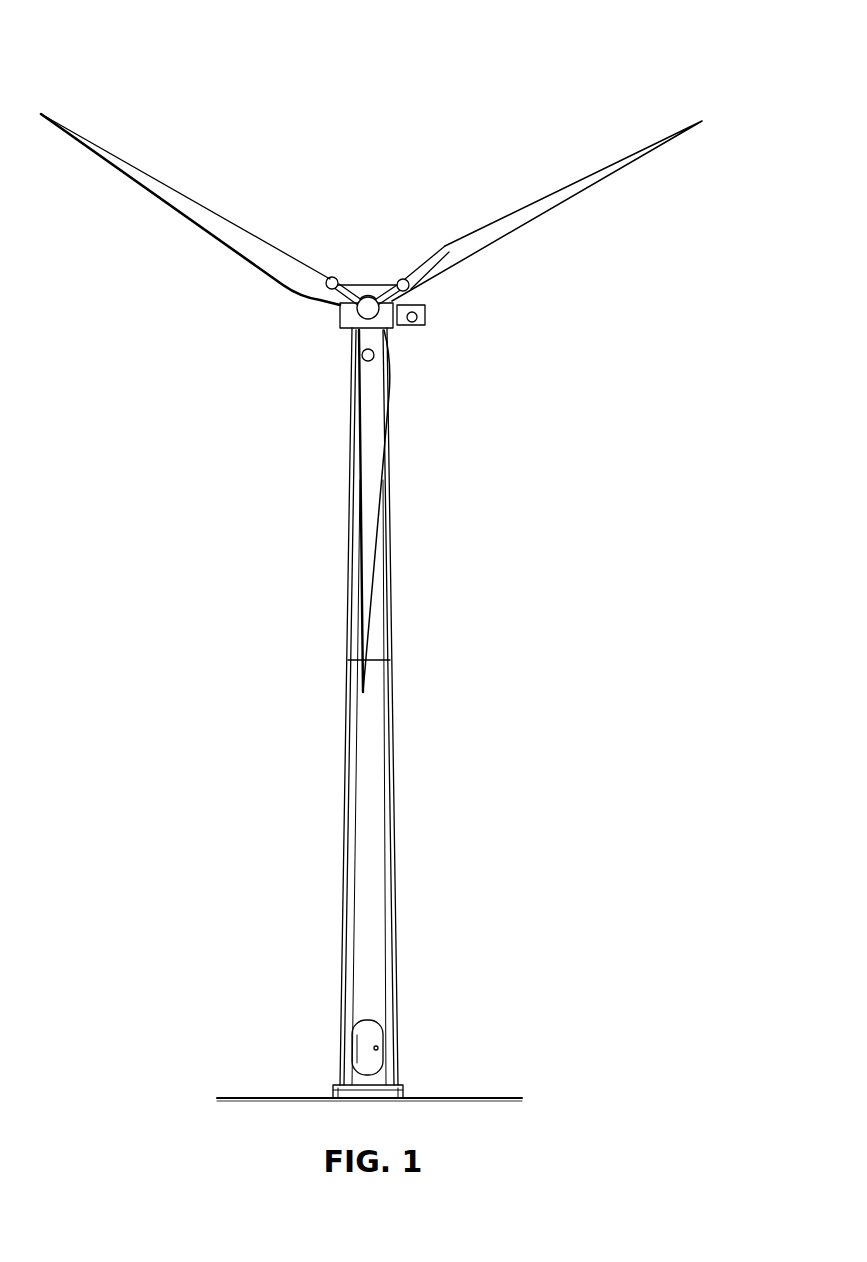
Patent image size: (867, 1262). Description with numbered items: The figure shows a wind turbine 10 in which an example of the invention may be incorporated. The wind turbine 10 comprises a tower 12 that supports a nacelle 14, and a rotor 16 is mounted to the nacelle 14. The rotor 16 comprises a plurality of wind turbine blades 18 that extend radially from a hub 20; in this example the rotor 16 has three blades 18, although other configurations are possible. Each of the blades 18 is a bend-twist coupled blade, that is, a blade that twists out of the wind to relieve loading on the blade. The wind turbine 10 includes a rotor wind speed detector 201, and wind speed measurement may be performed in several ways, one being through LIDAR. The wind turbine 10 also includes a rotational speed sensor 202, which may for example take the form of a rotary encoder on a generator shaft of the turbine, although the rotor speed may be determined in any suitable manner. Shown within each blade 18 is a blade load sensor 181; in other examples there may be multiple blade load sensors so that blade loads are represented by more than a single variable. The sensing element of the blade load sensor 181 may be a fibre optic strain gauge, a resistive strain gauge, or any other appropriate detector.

The wind turbine 10 is at (598, 97).
The tower 12 is at (380, 757).
The nacelle 14 is at (393, 328).
The rotor 16 is at (316, 337).
The wind turbine blade 18 is at (268, 243).
The blade load sensor 181 is at (337, 278).
The hub 20 is at (382, 287).
The rotor wind speed detector 201 is at (424, 305).
The rotational speed sensor 202 is at (372, 286).